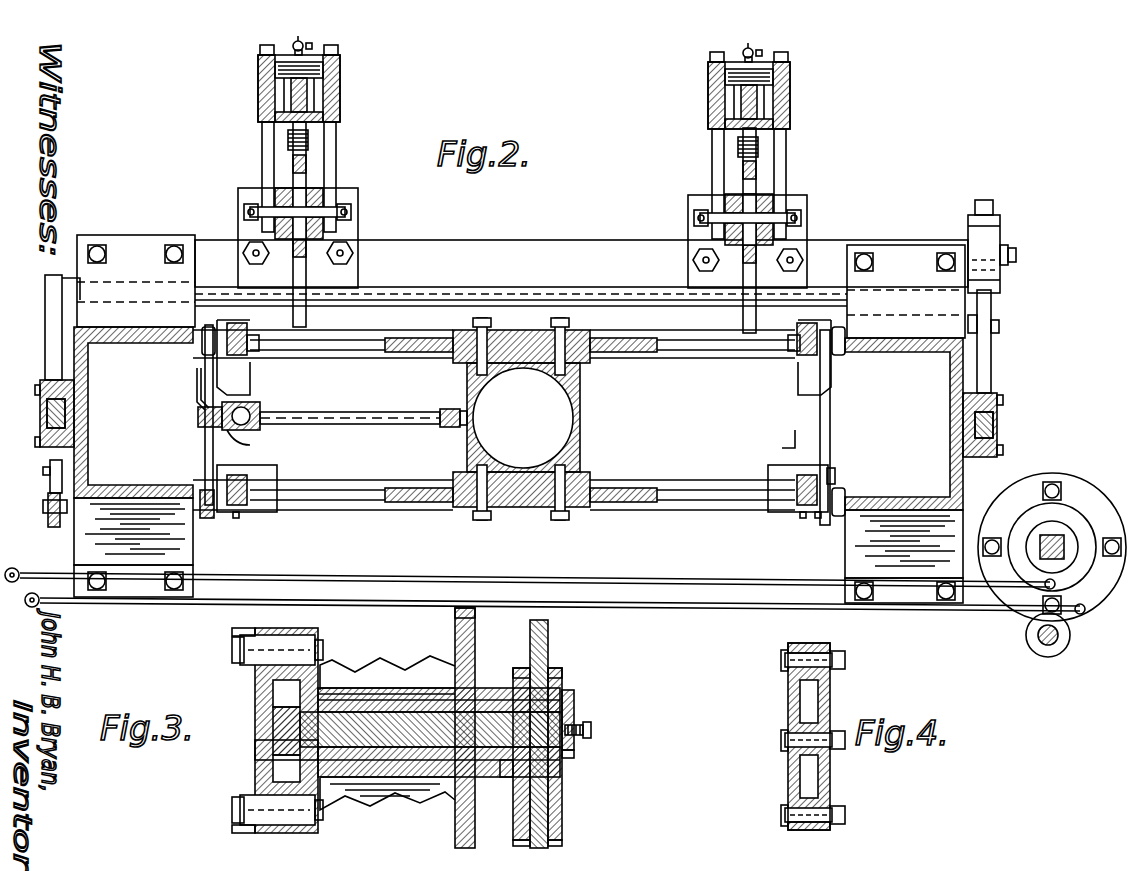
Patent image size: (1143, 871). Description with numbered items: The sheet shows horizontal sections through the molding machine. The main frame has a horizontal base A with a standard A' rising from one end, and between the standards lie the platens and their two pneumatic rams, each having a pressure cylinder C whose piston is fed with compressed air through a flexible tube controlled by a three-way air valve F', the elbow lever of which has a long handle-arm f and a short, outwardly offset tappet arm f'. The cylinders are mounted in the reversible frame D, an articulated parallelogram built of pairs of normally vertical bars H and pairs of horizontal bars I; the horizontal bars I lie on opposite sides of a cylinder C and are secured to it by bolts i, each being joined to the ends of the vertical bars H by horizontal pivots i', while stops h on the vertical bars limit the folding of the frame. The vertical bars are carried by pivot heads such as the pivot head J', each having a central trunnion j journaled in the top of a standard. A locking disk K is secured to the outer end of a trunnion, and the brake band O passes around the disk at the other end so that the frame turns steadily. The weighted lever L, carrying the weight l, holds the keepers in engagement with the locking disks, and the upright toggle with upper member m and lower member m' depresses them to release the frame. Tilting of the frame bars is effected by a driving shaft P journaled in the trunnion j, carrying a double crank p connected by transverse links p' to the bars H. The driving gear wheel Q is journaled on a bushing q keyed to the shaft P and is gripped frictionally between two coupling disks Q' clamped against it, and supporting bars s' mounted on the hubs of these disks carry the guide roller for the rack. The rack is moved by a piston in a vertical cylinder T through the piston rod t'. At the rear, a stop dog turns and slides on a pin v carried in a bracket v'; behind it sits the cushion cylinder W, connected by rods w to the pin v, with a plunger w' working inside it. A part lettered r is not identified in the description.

In FIG. 2, the horizontal base A is at (522, 286).
In FIG. 2, the standard A' is at (133, 462).
In FIG. 2, the pressure cylinder C is at (521, 418).
In FIG. 2, the horizontal bar I is at (660, 382).
In FIG. 2, the reversible frame D is at (692, 481).
In FIG. 2, the vertical bar H is at (245, 321).
In FIG. 3, the vertical bar H is at (298, 625).
In FIG. 4, the vertical bar H is at (820, 634).
In FIG. 2, the cushion cylinder W is at (322, 92).
In FIG. 2, the rod w is at (521, 142).
In FIG. 2, the plunger w' is at (503, 77).
In FIG. 2, the pin v is at (535, 215).
In FIG. 2, the bracket v' is at (508, 235).
In FIG. 2, the rod r is at (306, 320).
In FIG. 2, the weight l is at (990, 228).
In FIG. 2, the lever L is at (991, 347).
In FIG. 2, the upper toggle member m is at (40, 513).
In FIG. 2, the lower toggle member m' is at (39, 477).
In FIG. 2, the handle-arm f is at (198, 415).
In FIG. 2, the tappet arm f' is at (194, 389).
In FIG. 2, the three-way valve F' is at (229, 405).
In FIG. 2, the stop h is at (800, 440).
In FIG. 2, the bolt i is at (521, 423).
In FIG. 2, the horizontal pivot i' is at (521, 425).
In FIG. 3, the horizontal pivot i' is at (277, 730).
In FIG. 2, the vertical cylinder T is at (1052, 547).
In FIG. 2, the piston rod t' is at (1043, 534).
In FIG. 3, the pivot head J' is at (295, 730).
In FIG. 3, the double crank p is at (267, 720).
In FIG. 4, the double crank p is at (809, 736).
In FIG. 4, the transverse link p' is at (807, 738).
In FIG. 3, the driving shaft P is at (343, 720).
In FIG. 3, the trunnion j is at (385, 700).
In FIG. 3, the locking disk K is at (448, 645).
In FIG. 3, the band O is at (470, 612).
In FIG. 3, the driving gear wheel Q is at (548, 733).
In FIG. 3, the coupling disk Q' is at (544, 748).
In FIG. 3, the bushing q is at (570, 700).
In FIG. 3, the supporting bar s' is at (541, 831).